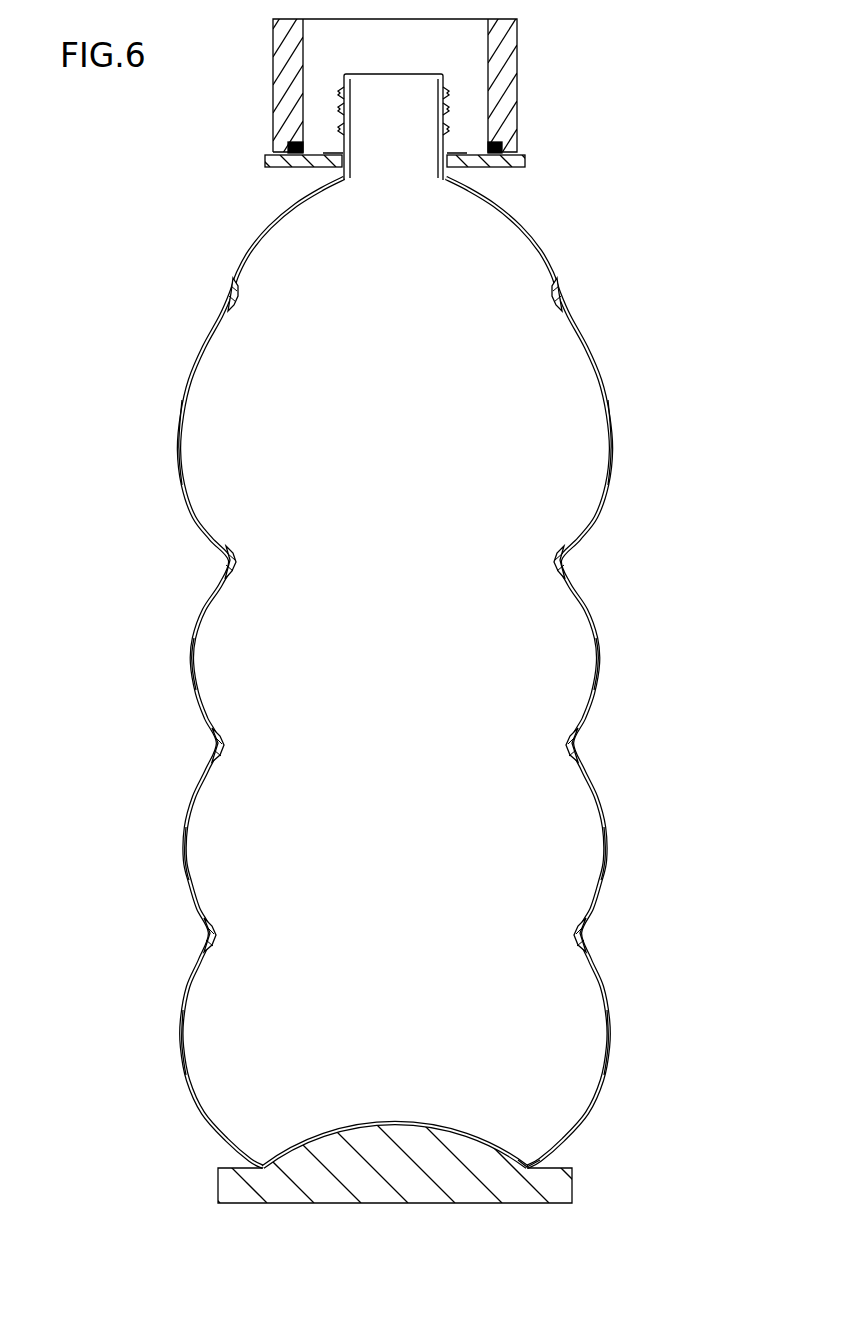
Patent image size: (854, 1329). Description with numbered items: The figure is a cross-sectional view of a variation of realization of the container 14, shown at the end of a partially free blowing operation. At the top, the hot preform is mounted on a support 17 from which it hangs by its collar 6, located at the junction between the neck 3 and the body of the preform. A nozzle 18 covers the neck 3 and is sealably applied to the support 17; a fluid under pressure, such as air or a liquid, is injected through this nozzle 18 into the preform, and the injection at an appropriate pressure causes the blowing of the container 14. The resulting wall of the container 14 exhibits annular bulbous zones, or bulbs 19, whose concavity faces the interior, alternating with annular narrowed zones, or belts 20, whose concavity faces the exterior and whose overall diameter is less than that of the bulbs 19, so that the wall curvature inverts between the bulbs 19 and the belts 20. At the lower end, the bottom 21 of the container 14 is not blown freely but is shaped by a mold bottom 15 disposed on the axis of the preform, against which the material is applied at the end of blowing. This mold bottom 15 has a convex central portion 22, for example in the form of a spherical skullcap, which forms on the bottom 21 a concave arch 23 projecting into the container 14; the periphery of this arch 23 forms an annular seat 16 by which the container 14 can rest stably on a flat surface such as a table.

The neck 3 is at (446, 96).
The collar 6 is at (449, 152).
The container 14 is at (608, 373).
The mold bottom 15 is at (452, 1185).
The annular seat 16 is at (525, 1165).
The support 17 is at (510, 162).
The nozzle 18 is at (508, 102).
The bulbs 19 is at (179, 412).
The belts 20 is at (231, 297).
The bottom 21 is at (183, 1038).
The convex central portion 22 is at (370, 1143).
The concave arch 23 is at (400, 1122).